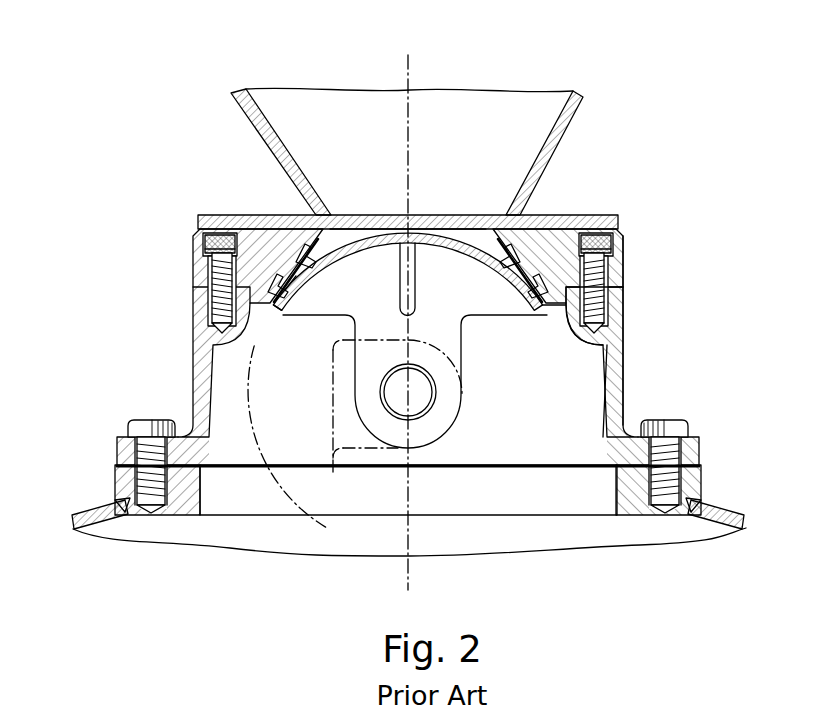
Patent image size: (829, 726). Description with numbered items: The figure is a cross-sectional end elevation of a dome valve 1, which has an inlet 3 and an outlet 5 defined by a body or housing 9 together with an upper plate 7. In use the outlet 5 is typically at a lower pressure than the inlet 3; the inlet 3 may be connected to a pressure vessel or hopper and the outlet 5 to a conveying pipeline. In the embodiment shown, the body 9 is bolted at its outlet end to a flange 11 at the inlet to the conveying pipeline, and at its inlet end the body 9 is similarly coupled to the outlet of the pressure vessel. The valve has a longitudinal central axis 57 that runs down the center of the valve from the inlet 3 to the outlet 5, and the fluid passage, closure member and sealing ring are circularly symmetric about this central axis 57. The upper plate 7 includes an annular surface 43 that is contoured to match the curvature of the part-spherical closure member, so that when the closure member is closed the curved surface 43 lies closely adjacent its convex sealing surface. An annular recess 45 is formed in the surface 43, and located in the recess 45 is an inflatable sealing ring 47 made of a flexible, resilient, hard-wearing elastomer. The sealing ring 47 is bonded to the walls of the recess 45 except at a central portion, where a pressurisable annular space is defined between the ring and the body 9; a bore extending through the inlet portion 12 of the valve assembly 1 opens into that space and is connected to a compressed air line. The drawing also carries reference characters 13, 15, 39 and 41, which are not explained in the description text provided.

The dome valve 1 is at (170, 147).
The inlet 3 is at (326, 108).
The outlet 5 is at (583, 139).
The longitudinal central axis 57 is at (407, 307).
The upper plate 7 is at (623, 242).
The body 9 is at (615, 358).
The flange 11 is at (690, 484).
The inlet portion 12 is at (623, 268).
The gap 13 is at (480, 238).
The top plate 15 is at (577, 227).
The ledge 39 is at (538, 311).
The arcuate insert 41 is at (470, 236).
The annular surface 43 is at (322, 243).
The annular recess 45 is at (264, 303).
The inflatable sealing ring 47 is at (319, 286).